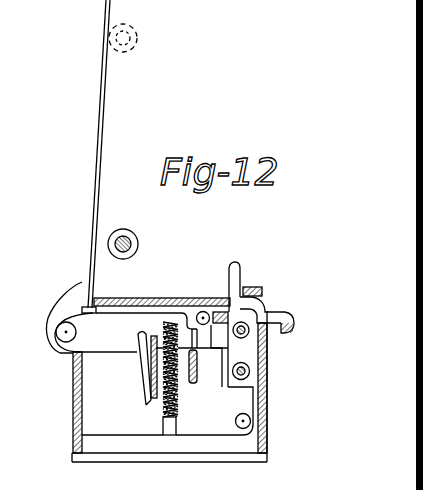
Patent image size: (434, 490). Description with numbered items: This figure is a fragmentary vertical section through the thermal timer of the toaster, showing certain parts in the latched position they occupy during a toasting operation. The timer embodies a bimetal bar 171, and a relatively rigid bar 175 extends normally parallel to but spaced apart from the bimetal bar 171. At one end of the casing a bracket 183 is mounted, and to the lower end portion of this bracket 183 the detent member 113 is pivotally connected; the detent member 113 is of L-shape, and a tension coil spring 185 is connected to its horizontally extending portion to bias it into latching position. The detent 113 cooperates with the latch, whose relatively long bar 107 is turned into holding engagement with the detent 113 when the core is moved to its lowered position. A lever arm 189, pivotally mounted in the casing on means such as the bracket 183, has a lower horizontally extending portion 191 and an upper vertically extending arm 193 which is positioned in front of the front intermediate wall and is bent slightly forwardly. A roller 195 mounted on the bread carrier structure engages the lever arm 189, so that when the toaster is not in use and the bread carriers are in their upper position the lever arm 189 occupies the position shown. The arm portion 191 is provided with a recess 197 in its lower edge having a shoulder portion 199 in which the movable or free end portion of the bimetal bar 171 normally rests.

The upper vertically extending arm 193 is at (104, 122).
The roller 195 is at (137, 38).
The lever arm 189 is at (83, 340).
The lower horizontally extending portion 191 is at (105, 353).
The bimetal bar 171 is at (150, 402).
The bracket 183 is at (215, 437).
The detent member 113 is at (242, 278).
The relatively long bar 107 is at (263, 292).
The tension coil spring 185 is at (213, 366).
The relatively rigid bar 175 is at (197, 366).
The recess 197 is at (139, 342).
The shoulder portion 199 is at (150, 385).